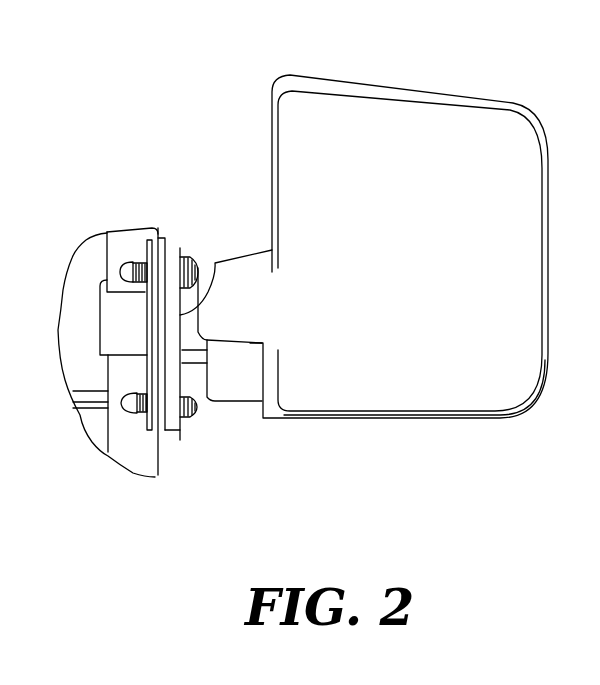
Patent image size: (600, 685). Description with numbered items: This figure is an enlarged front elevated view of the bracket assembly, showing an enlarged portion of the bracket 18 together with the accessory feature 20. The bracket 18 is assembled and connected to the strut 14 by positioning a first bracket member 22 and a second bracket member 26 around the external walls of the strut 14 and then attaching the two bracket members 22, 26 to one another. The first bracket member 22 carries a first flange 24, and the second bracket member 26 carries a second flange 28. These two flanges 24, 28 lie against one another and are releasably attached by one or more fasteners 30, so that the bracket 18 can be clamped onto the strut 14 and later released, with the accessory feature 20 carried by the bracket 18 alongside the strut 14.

The strut 14 is at (107, 235).
The bracket 18 is at (180, 247).
The accessory feature 20 is at (393, 88).
The first bracket member 22 is at (118, 327).
The first flange 24 is at (155, 477).
The second bracket member 26 is at (190, 305).
The second flange 28 is at (181, 440).
The fasteners 30 is at (127, 264).